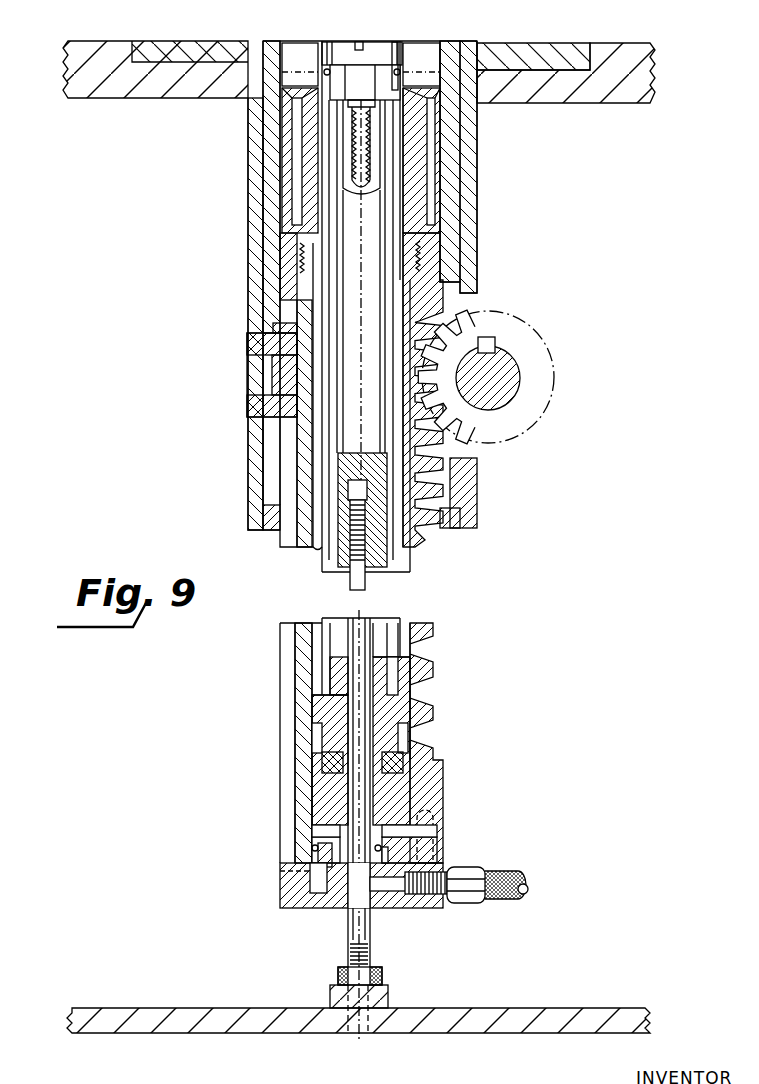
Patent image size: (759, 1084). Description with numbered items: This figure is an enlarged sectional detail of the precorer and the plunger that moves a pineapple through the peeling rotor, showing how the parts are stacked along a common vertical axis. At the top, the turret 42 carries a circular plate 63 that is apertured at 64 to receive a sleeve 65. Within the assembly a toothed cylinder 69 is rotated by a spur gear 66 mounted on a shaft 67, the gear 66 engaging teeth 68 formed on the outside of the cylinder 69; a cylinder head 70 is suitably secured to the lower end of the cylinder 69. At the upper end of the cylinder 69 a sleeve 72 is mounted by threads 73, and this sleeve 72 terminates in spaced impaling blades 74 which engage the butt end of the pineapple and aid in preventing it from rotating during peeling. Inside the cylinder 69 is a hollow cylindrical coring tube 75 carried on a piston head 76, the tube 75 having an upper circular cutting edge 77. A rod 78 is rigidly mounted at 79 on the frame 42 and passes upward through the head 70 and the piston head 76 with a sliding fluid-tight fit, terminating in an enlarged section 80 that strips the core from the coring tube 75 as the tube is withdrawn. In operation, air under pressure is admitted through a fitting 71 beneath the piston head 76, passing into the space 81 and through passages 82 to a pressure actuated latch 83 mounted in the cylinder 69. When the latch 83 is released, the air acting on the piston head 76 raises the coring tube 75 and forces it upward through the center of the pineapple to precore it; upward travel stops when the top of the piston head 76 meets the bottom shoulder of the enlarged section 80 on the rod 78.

The turret 42 is at (520, 1025).
The circular plate 63 is at (620, 92).
The aperture 64 is at (477, 104).
The sleeve 65 is at (252, 213).
The spur gear 66 is at (540, 378).
The shaft 67 is at (503, 358).
The teeth 68 is at (430, 532).
The cylinder 69 is at (440, 763).
The cylinder head 70 is at (393, 910).
The fitting 71 is at (470, 901).
The sleeve 72 is at (415, 151).
The threads 73 is at (417, 256).
The impaling blades 74 is at (298, 57).
The coring tube 75 is at (403, 447).
The piston head 76 is at (400, 705).
The circular cutting edge 77 is at (397, 43).
The rod 78 is at (348, 584).
The rod mounting 79 is at (387, 999).
The enlarged section 80 is at (342, 42).
The space 81 is at (400, 830).
The passages 82 is at (382, 848).
The pressure actuated latch 83 is at (317, 857).